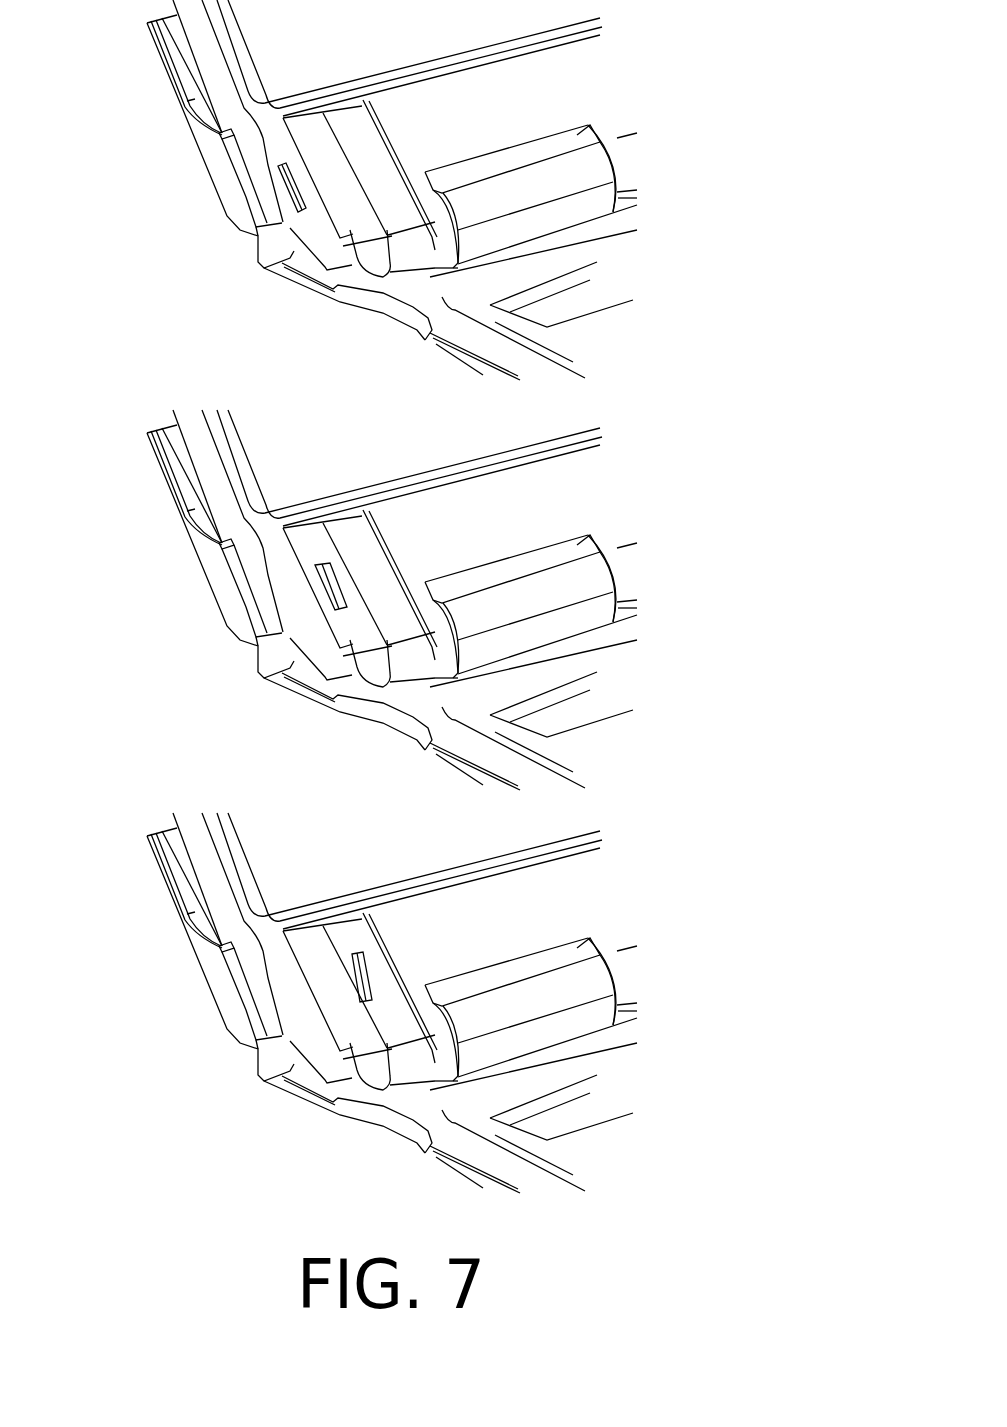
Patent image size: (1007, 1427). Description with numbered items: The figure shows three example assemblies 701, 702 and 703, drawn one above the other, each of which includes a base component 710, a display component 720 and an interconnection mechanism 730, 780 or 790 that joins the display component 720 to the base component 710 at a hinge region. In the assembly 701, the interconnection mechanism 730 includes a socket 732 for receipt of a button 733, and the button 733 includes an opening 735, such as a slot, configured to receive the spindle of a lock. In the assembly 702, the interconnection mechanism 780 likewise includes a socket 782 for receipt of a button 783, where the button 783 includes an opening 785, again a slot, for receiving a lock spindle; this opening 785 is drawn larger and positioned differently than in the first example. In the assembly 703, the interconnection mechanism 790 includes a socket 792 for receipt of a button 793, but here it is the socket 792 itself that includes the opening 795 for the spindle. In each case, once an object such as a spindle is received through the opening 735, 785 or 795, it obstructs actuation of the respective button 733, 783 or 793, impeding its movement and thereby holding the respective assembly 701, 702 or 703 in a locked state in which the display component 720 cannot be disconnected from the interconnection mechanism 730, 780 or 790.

The assembly 701 is at (142, 94).
The assembly 702 is at (146, 500).
The assembly 703 is at (148, 904).
The base component 710 is at (593, 356).
The display component 720 is at (296, 48).
The interconnection mechanism 730 is at (517, 107).
The socket 732 is at (385, 172).
The button 733 is at (312, 222).
The opening 735 is at (290, 195).
The interconnection mechanism 780 is at (520, 586).
The socket 782 is at (373, 597).
The button 783 is at (362, 705).
The opening 785 is at (236, 580).
The interconnection mechanism 790 is at (520, 998).
The socket 792 is at (376, 994).
The button 793 is at (365, 1117).
The opening 795 is at (248, 977).